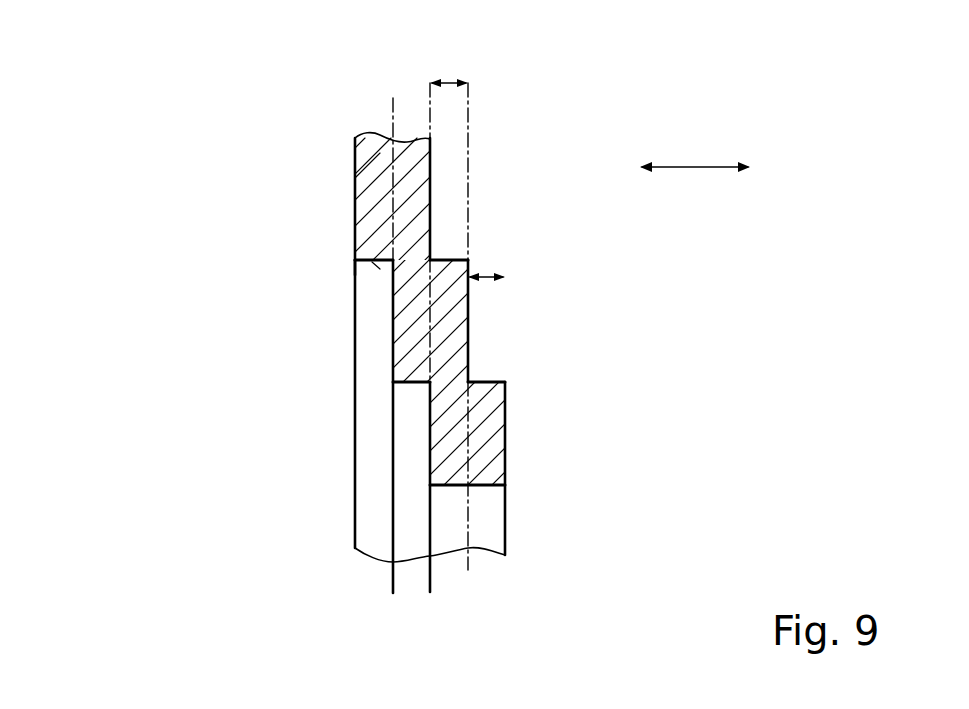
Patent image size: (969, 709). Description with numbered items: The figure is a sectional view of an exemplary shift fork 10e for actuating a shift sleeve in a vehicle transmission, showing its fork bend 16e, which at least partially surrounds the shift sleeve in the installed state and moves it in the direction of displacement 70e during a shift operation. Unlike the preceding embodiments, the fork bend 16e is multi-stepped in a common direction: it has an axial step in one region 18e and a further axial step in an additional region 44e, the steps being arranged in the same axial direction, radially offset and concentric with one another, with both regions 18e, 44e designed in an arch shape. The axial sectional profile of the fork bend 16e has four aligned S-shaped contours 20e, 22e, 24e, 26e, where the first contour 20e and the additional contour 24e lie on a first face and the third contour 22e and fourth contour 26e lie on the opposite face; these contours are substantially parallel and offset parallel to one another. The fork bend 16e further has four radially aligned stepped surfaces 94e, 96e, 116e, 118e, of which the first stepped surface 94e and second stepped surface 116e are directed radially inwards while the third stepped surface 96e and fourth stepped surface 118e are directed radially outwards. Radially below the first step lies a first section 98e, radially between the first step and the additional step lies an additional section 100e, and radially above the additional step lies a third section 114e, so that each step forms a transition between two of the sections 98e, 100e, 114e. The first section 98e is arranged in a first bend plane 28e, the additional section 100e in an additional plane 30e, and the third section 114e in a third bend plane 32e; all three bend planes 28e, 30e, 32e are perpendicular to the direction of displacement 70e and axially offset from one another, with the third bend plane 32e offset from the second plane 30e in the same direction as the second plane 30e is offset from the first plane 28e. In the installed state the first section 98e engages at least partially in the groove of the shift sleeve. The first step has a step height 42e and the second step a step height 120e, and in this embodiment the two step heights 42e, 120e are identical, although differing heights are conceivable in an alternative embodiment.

The shift fork 10e is at (195, 70).
The fork bend 16e is at (178, 110).
The region 18e is at (330, 384).
The first contour 20e is at (511, 381).
The third contour 22e is at (373, 390).
The additional contour 24e is at (494, 230).
The fourth contour 26e is at (338, 262).
The first bend plane 28e is at (468, 515).
The additional plane 30e is at (427, 313).
The third bend plane 32e is at (362, 152).
The step height 42e is at (496, 277).
The additional region 44e is at (262, 193).
The direction of displacement 70e is at (695, 167).
The first stepped surface 94e is at (418, 381).
The third stepped surface 96e is at (474, 373).
The first section 98e is at (478, 455).
The additional section 100e is at (458, 309).
The third section 114e is at (386, 166).
The second stepped surface 116e is at (362, 267).
The fourth stepped surface 118e is at (447, 259).
The step height 120e is at (448, 82).